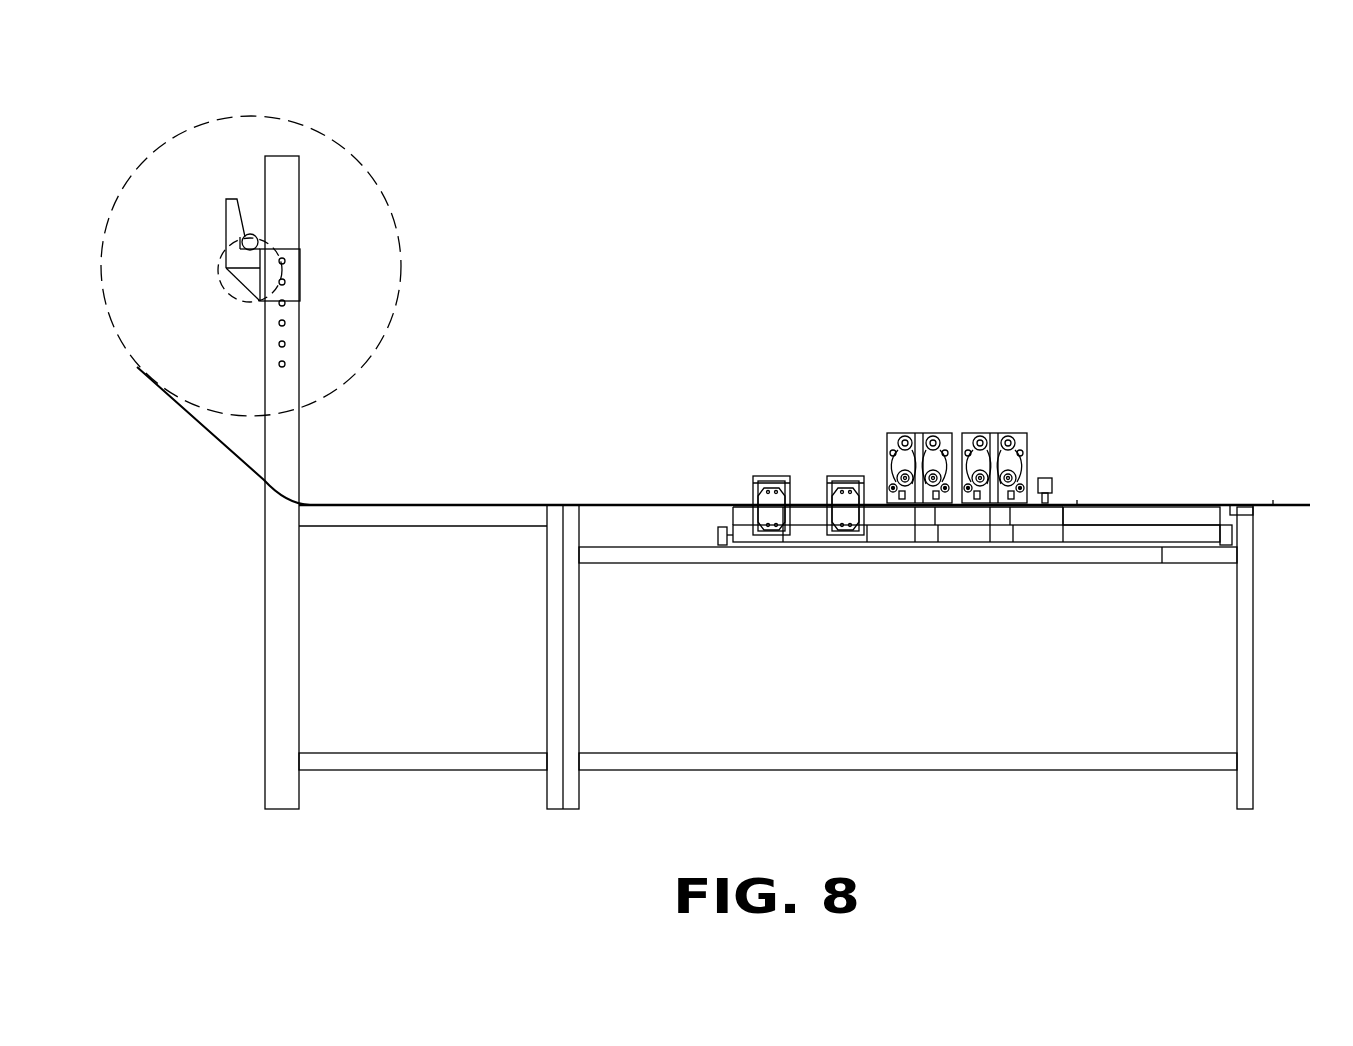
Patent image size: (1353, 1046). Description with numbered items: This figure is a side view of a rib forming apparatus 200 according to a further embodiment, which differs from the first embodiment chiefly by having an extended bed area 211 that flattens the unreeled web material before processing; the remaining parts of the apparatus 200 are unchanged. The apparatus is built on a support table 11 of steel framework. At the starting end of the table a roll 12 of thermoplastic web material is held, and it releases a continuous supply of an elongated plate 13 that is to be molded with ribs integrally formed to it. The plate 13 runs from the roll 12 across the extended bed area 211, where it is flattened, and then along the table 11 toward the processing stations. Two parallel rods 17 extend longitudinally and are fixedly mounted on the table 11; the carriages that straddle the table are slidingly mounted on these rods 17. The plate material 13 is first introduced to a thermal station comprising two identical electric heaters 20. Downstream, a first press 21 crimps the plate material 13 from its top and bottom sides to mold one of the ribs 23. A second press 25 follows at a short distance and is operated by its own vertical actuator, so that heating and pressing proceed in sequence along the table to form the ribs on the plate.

The rib forming apparatus 200 is at (625, 421).
The roll 12 is at (160, 150).
The elongated plate 13 is at (417, 505).
The extended bed area 211 is at (455, 519).
The support table 11 is at (1040, 555).
The parallel rods 17 is at (1140, 533).
The rib 23 is at (1210, 503).
The electric heaters 20 is at (830, 476).
The first press 21 is at (913, 433).
The second press 25 is at (990, 433).